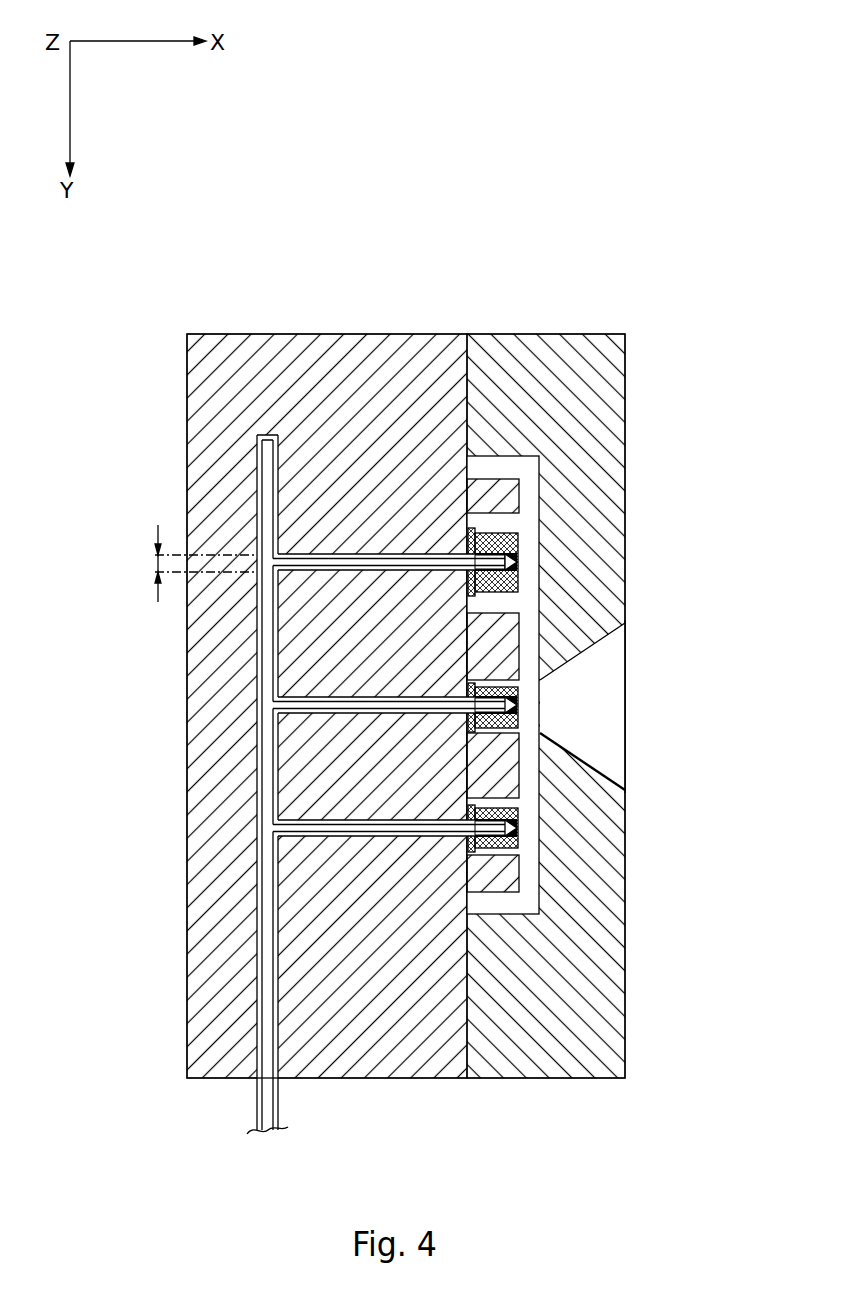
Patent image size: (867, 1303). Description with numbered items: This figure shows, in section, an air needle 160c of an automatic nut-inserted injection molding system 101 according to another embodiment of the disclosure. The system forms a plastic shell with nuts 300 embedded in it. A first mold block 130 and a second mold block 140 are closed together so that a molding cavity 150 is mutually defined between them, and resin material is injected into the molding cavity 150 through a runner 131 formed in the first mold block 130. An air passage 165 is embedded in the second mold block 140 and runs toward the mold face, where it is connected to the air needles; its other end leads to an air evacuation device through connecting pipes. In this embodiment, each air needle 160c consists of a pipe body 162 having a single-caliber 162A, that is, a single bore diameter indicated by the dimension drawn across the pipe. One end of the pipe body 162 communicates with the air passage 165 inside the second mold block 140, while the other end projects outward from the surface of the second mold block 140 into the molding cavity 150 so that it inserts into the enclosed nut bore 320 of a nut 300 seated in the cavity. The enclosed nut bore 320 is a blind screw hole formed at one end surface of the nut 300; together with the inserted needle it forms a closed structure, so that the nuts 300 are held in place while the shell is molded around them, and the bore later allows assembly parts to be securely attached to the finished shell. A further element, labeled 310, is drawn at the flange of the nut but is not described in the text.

The automatic nut-inserted injection molding system 101 is at (730, 188).
The first mold block 130 is at (592, 494).
The runner 131 is at (601, 697).
The second mold block 140 is at (210, 440).
The molding cavity 150 is at (525, 464).
The air needle 160c is at (372, 552).
The pipe body 162 is at (518, 562).
The single-caliber 162A is at (157, 563).
The air passage 165 is at (268, 657).
The nut 300 is at (558, 568).
The insert flange 310 is at (466, 551).
The enclosed nut bore 320 is at (528, 706).